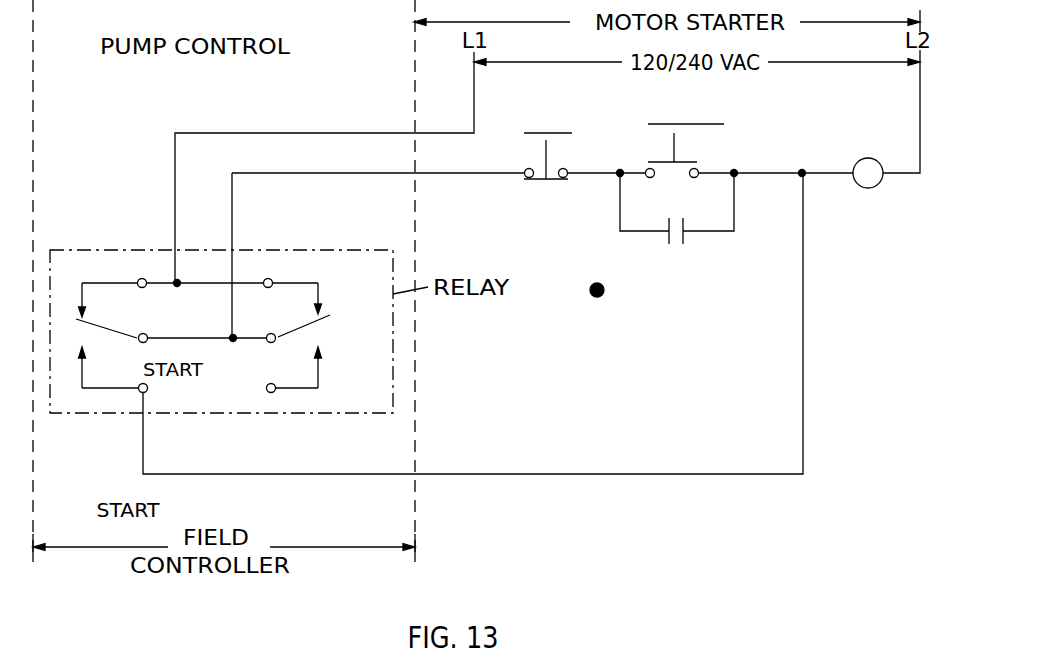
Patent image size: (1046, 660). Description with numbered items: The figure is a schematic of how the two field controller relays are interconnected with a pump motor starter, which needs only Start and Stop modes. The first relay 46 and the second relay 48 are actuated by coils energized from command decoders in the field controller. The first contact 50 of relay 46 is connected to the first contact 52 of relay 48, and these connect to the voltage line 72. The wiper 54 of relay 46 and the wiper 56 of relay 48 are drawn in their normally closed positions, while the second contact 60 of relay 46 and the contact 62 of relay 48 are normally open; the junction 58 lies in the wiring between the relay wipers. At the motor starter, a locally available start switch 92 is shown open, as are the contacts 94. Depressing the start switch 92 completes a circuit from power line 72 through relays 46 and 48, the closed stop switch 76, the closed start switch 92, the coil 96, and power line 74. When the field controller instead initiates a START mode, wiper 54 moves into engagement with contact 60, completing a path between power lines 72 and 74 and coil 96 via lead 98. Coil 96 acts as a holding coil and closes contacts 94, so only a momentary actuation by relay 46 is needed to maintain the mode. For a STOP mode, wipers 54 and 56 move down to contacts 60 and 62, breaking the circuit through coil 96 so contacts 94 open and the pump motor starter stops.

The first relay 46 is at (146, 262).
The second relay 48 is at (267, 262).
The first contact 50 is at (96, 282).
The first contact 52 is at (309, 282).
The wiper 54 is at (107, 329).
The wiper 56 is at (308, 325).
The junction conductor 58 is at (217, 340).
The second contact 60 is at (110, 390).
The contact 62 is at (322, 375).
The voltage line 72 is at (476, 108).
The line 74 is at (920, 118).
The stop switch 76 is at (546, 181).
The start switch 92 is at (676, 150).
The contacts 94 is at (667, 233).
The coil 96 is at (868, 188).
The lead 98 is at (804, 348).